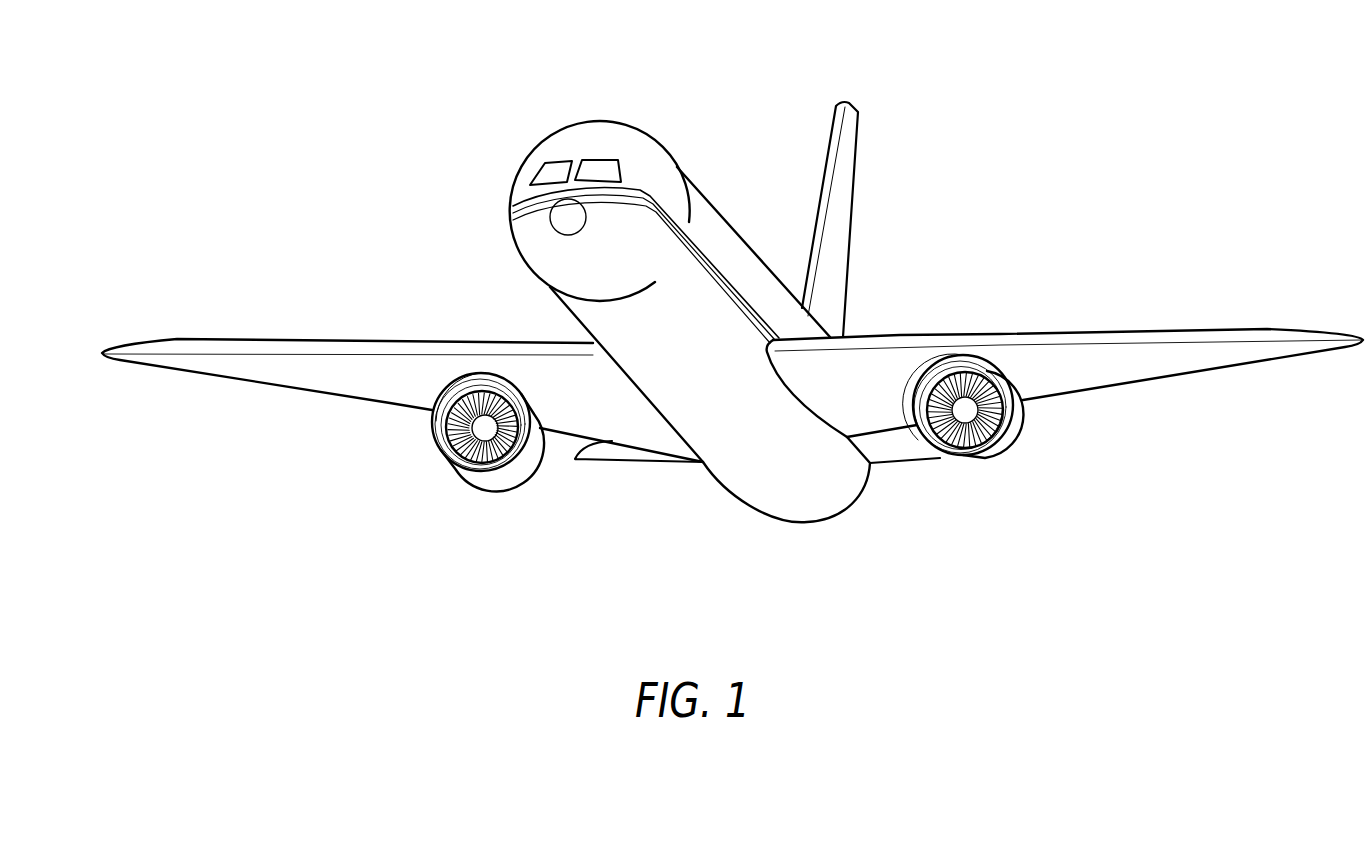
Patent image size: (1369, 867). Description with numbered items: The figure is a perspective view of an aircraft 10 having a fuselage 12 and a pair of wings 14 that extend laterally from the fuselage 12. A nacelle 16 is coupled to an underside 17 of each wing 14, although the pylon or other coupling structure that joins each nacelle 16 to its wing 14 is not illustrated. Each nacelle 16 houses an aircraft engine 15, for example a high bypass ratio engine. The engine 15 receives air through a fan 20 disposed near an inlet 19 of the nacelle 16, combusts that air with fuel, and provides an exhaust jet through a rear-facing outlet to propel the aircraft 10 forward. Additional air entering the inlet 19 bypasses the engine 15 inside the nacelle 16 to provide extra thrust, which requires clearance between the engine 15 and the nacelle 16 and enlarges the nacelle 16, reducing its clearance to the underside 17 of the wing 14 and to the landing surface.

The aircraft 10 is at (306, 92).
The fuselage 12 is at (700, 217).
The wing 14 is at (255, 345).
The aircraft engine 15 is at (448, 457).
The nacelle 16 is at (528, 457).
The underside 17 is at (253, 367).
The inlet 19 is at (438, 421).
The fan 20 is at (493, 467).